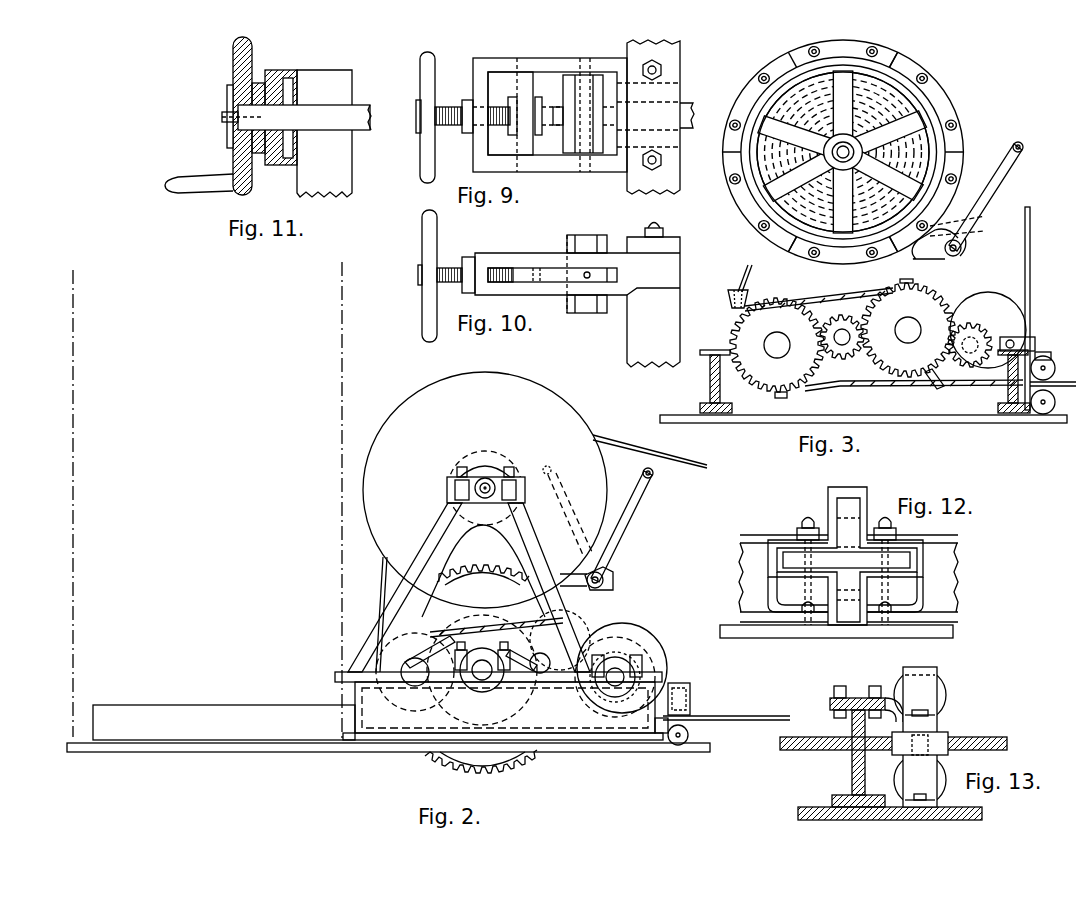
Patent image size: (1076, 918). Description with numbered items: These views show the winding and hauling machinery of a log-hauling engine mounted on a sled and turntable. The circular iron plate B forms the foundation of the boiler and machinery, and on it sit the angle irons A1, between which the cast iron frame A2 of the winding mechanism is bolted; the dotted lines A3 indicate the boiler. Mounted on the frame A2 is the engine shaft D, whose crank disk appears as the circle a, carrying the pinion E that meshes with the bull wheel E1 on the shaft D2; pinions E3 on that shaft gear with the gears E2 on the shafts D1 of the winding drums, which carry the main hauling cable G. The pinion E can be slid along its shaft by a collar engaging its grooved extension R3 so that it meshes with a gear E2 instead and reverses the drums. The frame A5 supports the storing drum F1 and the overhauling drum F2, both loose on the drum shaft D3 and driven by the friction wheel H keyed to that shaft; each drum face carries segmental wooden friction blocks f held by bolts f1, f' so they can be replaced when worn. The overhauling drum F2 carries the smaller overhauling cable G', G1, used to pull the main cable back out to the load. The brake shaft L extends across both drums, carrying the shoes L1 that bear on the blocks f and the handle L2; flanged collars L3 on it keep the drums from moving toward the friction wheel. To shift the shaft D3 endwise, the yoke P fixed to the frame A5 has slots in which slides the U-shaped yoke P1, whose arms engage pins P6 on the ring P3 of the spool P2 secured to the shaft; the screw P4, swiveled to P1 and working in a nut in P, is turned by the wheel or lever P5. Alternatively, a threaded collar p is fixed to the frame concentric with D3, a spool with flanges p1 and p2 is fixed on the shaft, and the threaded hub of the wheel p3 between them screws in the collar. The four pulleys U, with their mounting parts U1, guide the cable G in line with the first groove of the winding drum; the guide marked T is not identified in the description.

In FIG. 11, the circular collar p is at (285, 72).
In FIG. 11, the spool flange p1 is at (283, 92).
In FIG. 11, the spool flange p2 is at (233, 100).
In FIG. 11, the wheel p3 is at (233, 58).
In FIG. 11, the drum shaft D3 is at (296, 117).
In FIG. 9, the drum shaft D3 is at (668, 117).
In FIG. 3, the drum shaft D3 is at (843, 156).
In FIG. 11, the frame A5 is at (324, 133).
In FIG. 10, the frame A5 is at (653, 295).
In FIG. 2, the frame A5 is at (432, 545).
In FIG. 9, the yoke P is at (540, 70).
In FIG. 10, the yoke P is at (492, 260).
In FIG. 9, the sliding yoke P1 is at (517, 82).
In FIG. 10, the sliding yoke P1 is at (527, 275).
In FIG. 9, the spool P2 is at (564, 85).
In FIG. 10, the spool P2 is at (601, 313).
In FIG. 9, the ring P3 is at (588, 88).
In FIG. 10, the ring P3 is at (585, 243).
In FIG. 9, the screw P4 is at (447, 107).
In FIG. 9, the wheel or lever P5 is at (424, 78).
In FIG. 10, the wheel or lever P5 is at (426, 238).
In FIG. 10, the pin P6 is at (586, 273).
In FIG. 3, the storing drum F1 is at (957, 110).
In FIG. 3, the segmental wooden friction blocks f is at (802, 240).
In FIG. 3, the bolts f1 is at (771, 75).
In FIG. 3, the bolts f' is at (907, 54).
In FIG. 3, the friction wheel H is at (762, 112).
In FIG. 3, the brake shaft L is at (960, 254).
In FIG. 2, the brake shaft L is at (603, 588).
In FIG. 3, the brake shoes L1 is at (977, 228).
In FIG. 2, the brake shoes L1 is at (622, 558).
In FIG. 3, the handle L2 is at (996, 185).
In FIG. 2, the handle L2 is at (627, 520).
In FIG. 3, the flanged collar L3 is at (968, 212).
In FIG. 3, the main or hauling cable G is at (806, 281).
In FIG. 2, the main or hauling cable G is at (573, 638).
In FIG. 13, the main or hauling cable G is at (893, 736).
In FIG. 3, the overhauling cable G' is at (958, 394).
In FIG. 2, the overhauling cable G1 is at (650, 463).
In FIG. 3, the guide funnel T is at (728, 296).
In FIG. 3, the pinion E is at (943, 379).
In FIG. 2, the pinion E is at (626, 662).
In FIG. 2, the large gear or bull wheel E1 is at (467, 574).
In FIG. 3, the gears E2 is at (842, 338).
In FIG. 3, the pinions E3 is at (845, 356).
In FIG. 3, the engine shaft D is at (970, 345).
In FIG. 2, the engine shaft D is at (615, 677).
In FIG. 3, the winding drum shafts D1 is at (842, 337).
In FIG. 2, the winding drum shafts D1 is at (540, 648).
In FIG. 3, the shaft D2 is at (842, 337).
In FIG. 2, the shaft D2 is at (482, 670).
In FIG. 3, the pulley a is at (988, 330).
In FIG. 2, the pulley a is at (622, 668).
In FIG. 3, the extension of the pinion R3 is at (1005, 338).
In FIG. 2, the angle irons A1 is at (224, 722).
In FIG. 3, the cast iron frame A2 is at (710, 380).
In FIG. 2, the cast iron frame A2 is at (499, 706).
In FIG. 12, the cast iron frame A2 is at (948, 562).
In FIG. 13, the cast iron frame A2 is at (852, 770).
In FIG. 2, the boiler location A3 is at (207, 500).
In FIG. 3, the circular iron plate B is at (775, 422).
In FIG. 2, the circular iron plate B is at (243, 745).
In FIG. 12, the circular iron plate B is at (958, 634).
In FIG. 13, the circular iron plate B is at (803, 809).
In FIG. 3, the pulleys U is at (1055, 368).
In FIG. 2, the pulleys U is at (691, 700).
In FIG. 12, the pulleys U is at (845, 511).
In FIG. 13, the pulleys U is at (945, 700).
In FIG. 12, the roller bracket U1 is at (790, 618).
In FIG. 2, the overhauling drum F2 is at (485, 490).